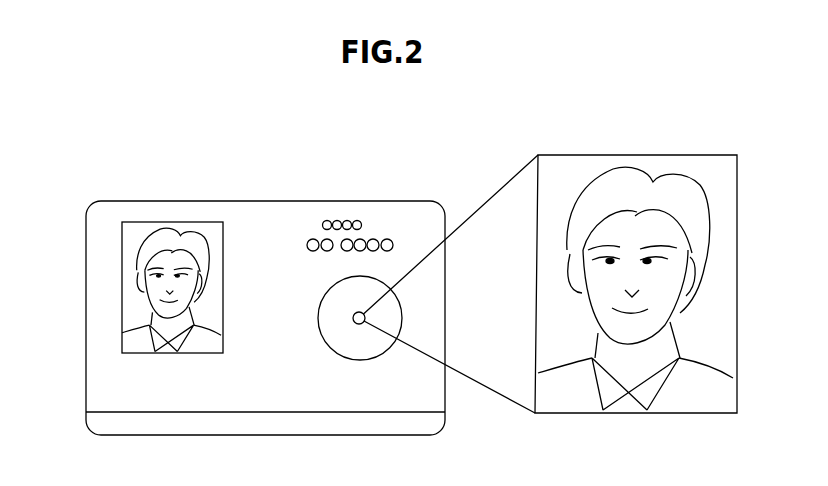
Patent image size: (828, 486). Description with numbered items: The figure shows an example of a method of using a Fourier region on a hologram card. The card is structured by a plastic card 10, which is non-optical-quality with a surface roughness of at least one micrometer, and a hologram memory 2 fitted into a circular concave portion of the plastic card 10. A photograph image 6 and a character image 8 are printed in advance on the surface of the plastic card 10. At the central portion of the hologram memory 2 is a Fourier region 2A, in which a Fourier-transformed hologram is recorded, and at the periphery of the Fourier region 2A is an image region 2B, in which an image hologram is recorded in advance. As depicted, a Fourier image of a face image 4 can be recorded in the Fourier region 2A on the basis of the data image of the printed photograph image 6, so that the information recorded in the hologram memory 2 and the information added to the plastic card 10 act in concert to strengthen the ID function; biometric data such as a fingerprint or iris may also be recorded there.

The hologram memory 2 is at (307, 131).
The Fourier region 2A is at (360, 311).
The image region 2B is at (327, 302).
The face image 4 is at (730, 327).
The photograph image 6 is at (163, 225).
The character image 8 is at (395, 233).
The plastic card 10 is at (92, 338).